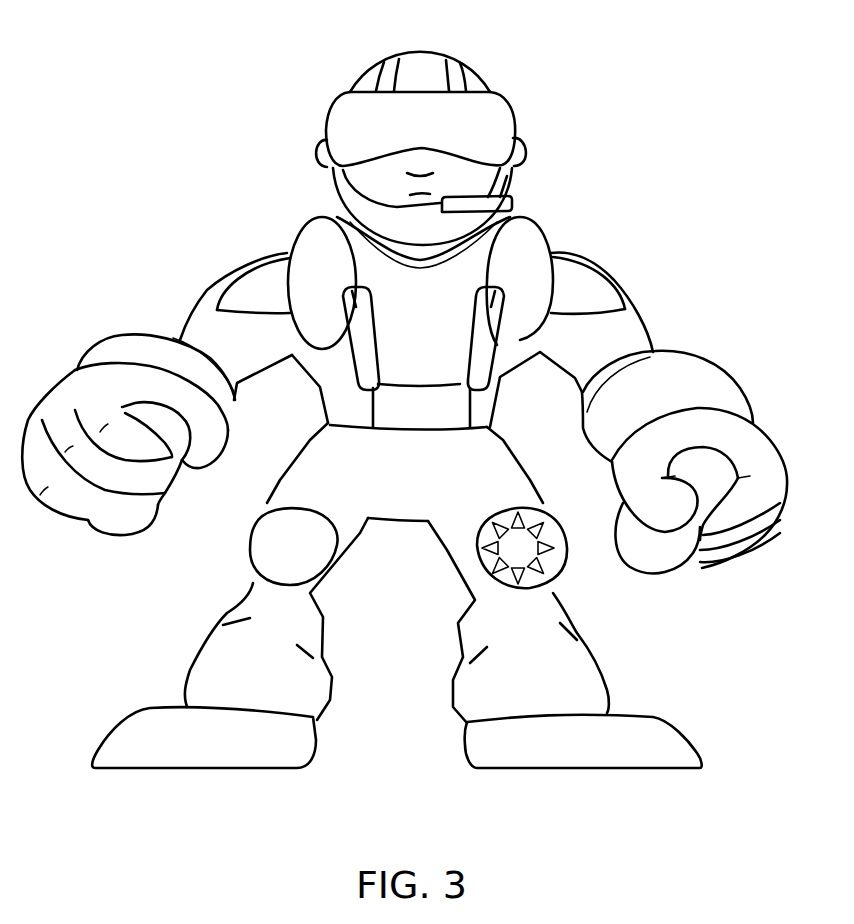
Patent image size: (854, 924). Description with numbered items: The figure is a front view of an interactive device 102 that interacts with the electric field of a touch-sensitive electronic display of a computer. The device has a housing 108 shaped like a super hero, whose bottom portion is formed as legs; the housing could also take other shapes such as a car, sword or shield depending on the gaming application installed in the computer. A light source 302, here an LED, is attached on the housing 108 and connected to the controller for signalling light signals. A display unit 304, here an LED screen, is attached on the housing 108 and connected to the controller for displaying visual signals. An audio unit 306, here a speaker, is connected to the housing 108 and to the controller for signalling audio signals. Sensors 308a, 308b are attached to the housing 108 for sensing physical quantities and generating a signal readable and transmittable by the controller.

The interactive device 102 is at (256, 68).
The housing 108 is at (627, 330).
The light source 302 is at (265, 558).
The display unit 304 is at (500, 120).
The audio unit 306 is at (543, 573).
The sensor 308a is at (330, 220).
The sensor 308b is at (518, 222).